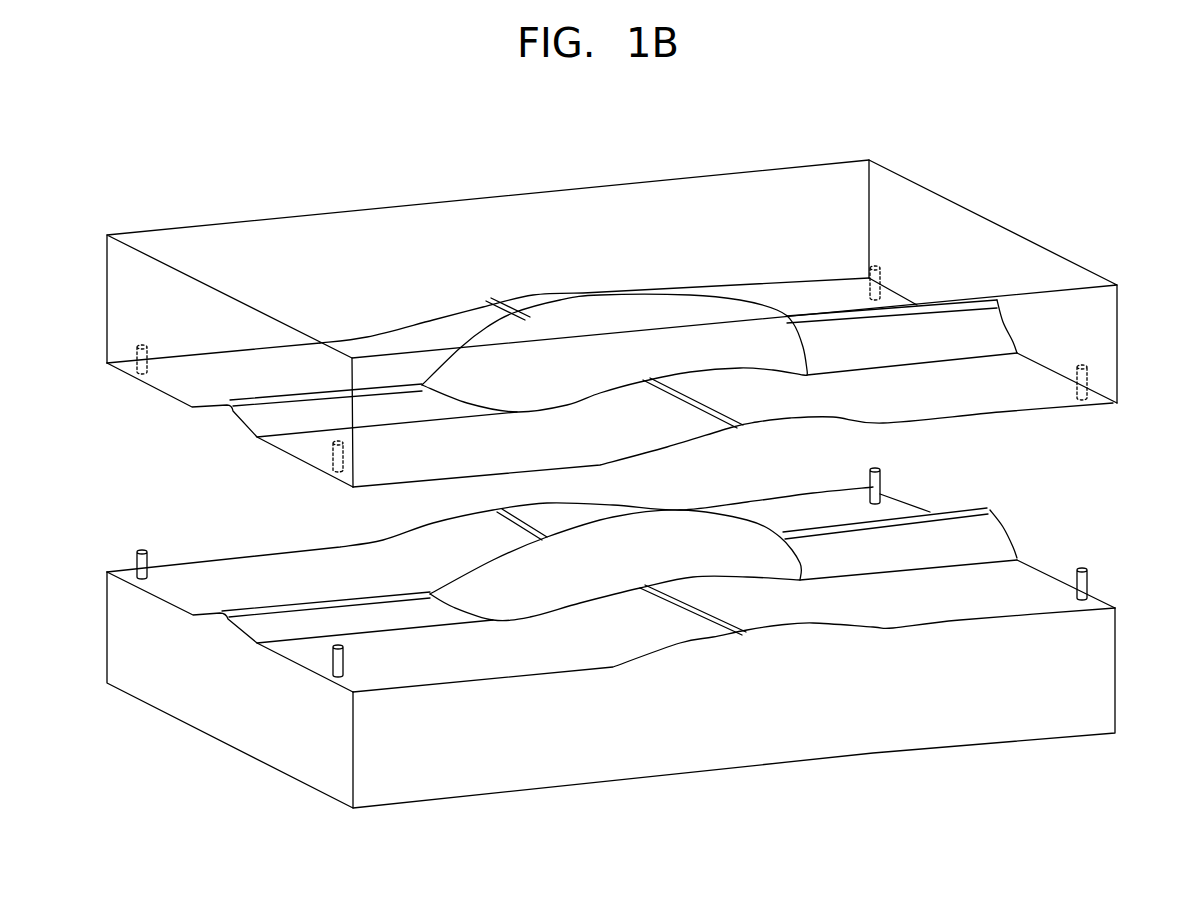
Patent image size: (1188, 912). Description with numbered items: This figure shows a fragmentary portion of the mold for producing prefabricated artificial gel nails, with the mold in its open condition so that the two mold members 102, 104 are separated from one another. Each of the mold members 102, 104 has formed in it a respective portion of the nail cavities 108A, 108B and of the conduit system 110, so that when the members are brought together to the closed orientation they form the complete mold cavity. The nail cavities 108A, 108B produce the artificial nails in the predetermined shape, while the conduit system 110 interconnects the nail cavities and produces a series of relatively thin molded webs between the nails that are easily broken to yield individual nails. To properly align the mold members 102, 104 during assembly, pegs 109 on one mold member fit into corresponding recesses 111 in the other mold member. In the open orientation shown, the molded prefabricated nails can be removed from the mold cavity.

The mold member 102 is at (1097, 326).
The mold member 104 is at (1097, 677).
The nail cavity 108A is at (600, 315).
The nail cavity 108B is at (677, 557).
The pegs 109 is at (1080, 572).
The conduit system 110 is at (495, 302).
The recesses 111 is at (1080, 367).